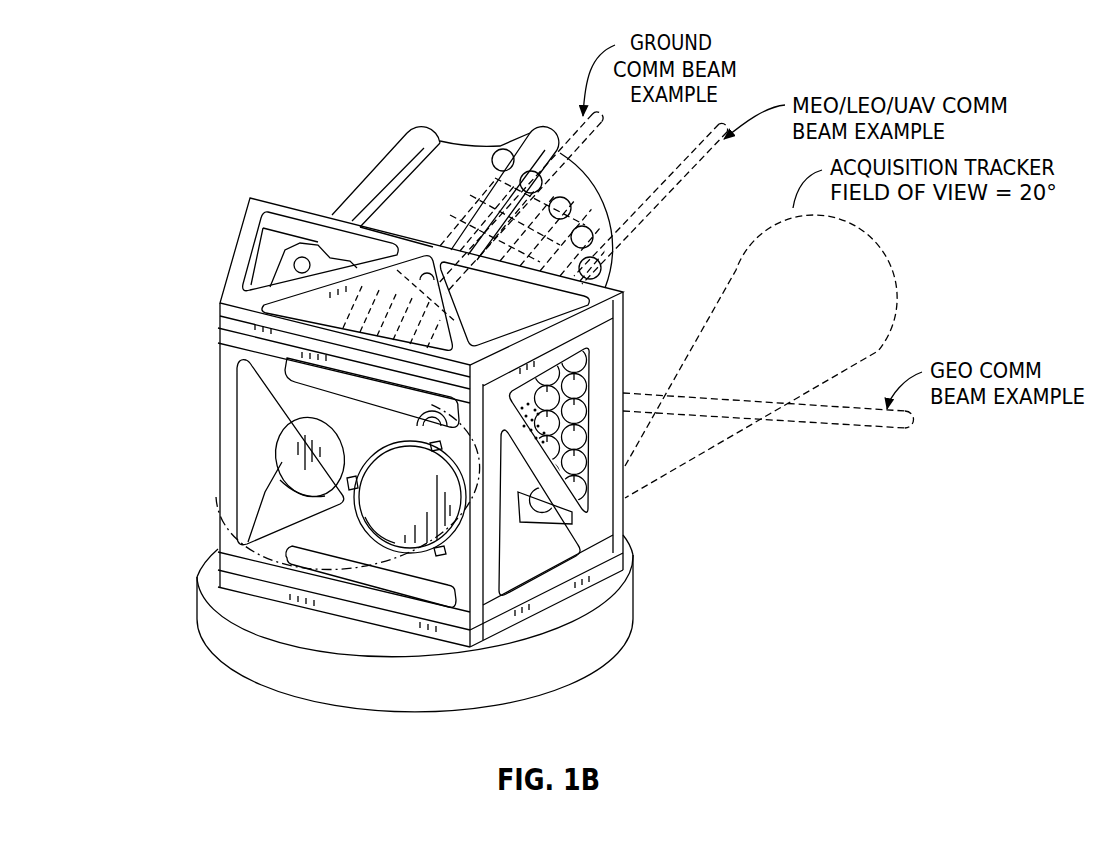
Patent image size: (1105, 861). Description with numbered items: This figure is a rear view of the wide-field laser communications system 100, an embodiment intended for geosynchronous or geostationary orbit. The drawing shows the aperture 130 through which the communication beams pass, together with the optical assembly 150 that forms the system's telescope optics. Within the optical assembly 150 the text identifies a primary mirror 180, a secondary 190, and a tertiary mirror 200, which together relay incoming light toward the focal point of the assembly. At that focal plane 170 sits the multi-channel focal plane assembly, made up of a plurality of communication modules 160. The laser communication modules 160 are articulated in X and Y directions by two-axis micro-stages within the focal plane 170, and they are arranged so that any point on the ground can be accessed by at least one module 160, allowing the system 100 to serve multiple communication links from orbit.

The wide-field laser communications system 100 is at (477, 93).
The aperture 130 is at (574, 206).
The optical assembly 150 is at (283, 441).
The communication modules 160 is at (535, 423).
The focal plane 170 is at (547, 436).
The primary mirror 180 is at (383, 504).
The secondary mirror 190 is at (413, 422).
The tertiary mirror 200 is at (218, 500).